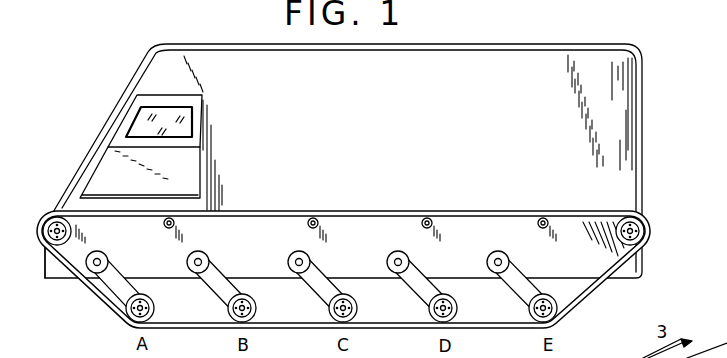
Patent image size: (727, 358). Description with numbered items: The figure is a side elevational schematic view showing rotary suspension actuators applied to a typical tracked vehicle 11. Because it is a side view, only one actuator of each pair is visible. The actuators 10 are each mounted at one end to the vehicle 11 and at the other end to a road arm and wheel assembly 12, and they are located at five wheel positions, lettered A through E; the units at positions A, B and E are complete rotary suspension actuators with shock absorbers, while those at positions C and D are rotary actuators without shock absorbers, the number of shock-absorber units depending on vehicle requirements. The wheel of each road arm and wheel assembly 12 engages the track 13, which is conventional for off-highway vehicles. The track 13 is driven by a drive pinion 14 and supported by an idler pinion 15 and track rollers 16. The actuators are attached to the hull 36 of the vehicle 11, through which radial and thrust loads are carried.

The actuator 10 is at (187, 260).
The tracked vehicle 11 is at (407, 110).
The road arm and wheel assembly 12 is at (155, 304).
The track 13 is at (588, 302).
The drive pinion 14 is at (643, 224).
The idler pinion 15 is at (50, 217).
The track rollers 16 is at (163, 225).
The hull 36 is at (53, 270).